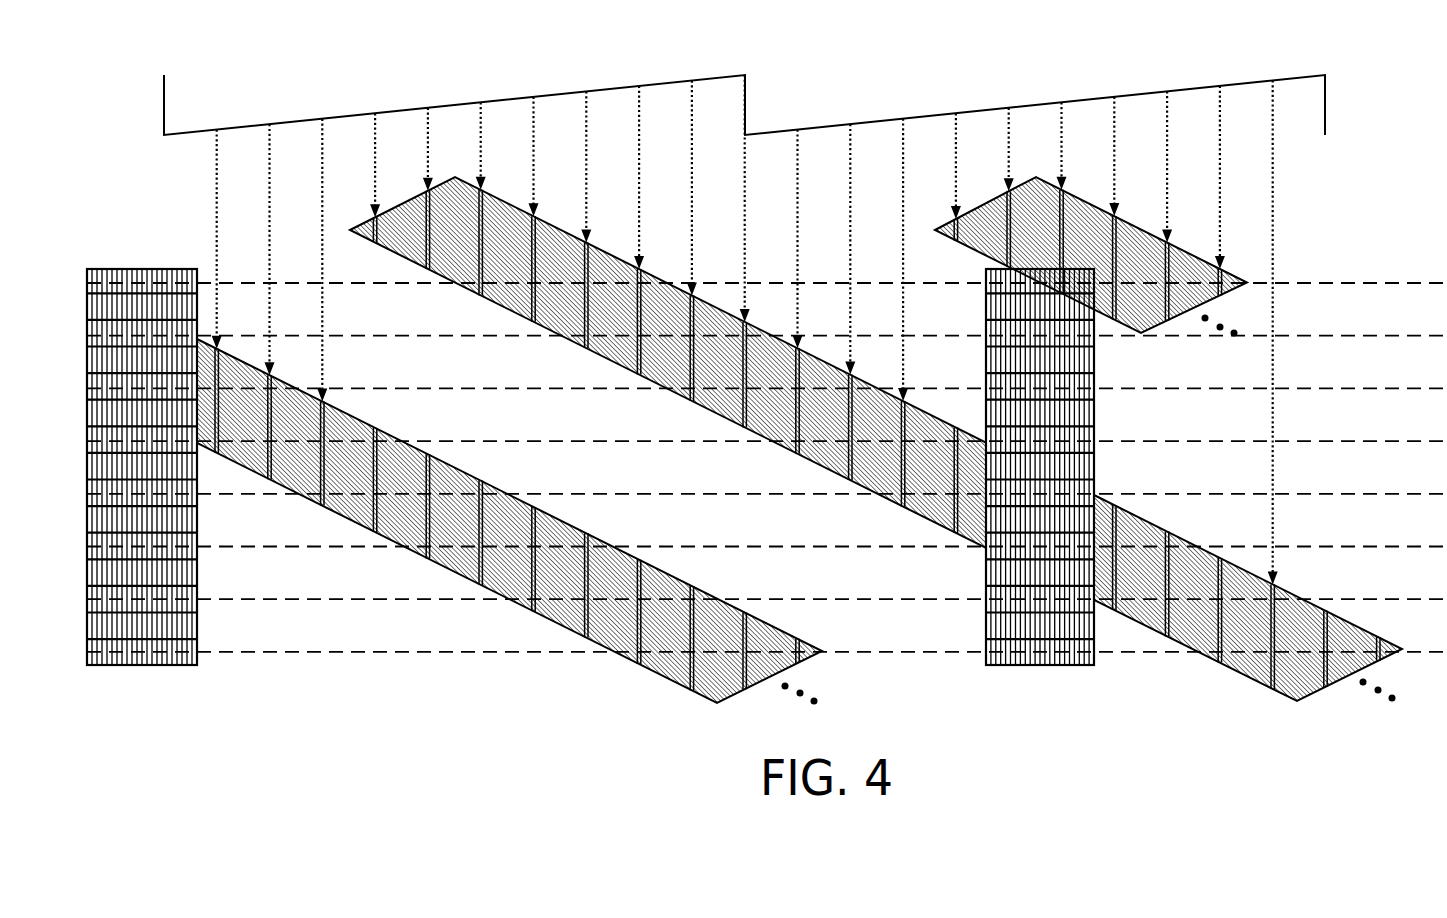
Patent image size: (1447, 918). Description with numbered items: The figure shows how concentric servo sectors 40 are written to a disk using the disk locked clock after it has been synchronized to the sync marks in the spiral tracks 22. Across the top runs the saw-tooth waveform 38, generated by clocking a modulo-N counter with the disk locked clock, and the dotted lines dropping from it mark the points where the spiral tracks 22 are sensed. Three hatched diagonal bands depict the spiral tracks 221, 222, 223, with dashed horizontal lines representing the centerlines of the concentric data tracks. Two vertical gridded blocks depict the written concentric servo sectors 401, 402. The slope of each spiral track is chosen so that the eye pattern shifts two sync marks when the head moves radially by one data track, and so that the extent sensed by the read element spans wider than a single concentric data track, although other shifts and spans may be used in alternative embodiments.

The saw-tooth waveform 38 is at (163, 107).
The concentric servo sectors 40 is at (590, 494).
The first concentric servo sector 401 is at (147, 667).
The second concentric servo sector 402 is at (1050, 667).
The spiral tracks 22 is at (799, 458).
The first spiral track 221 is at (762, 683).
The second spiral track 222 is at (1345, 677).
The third spiral track 223 is at (1143, 230).